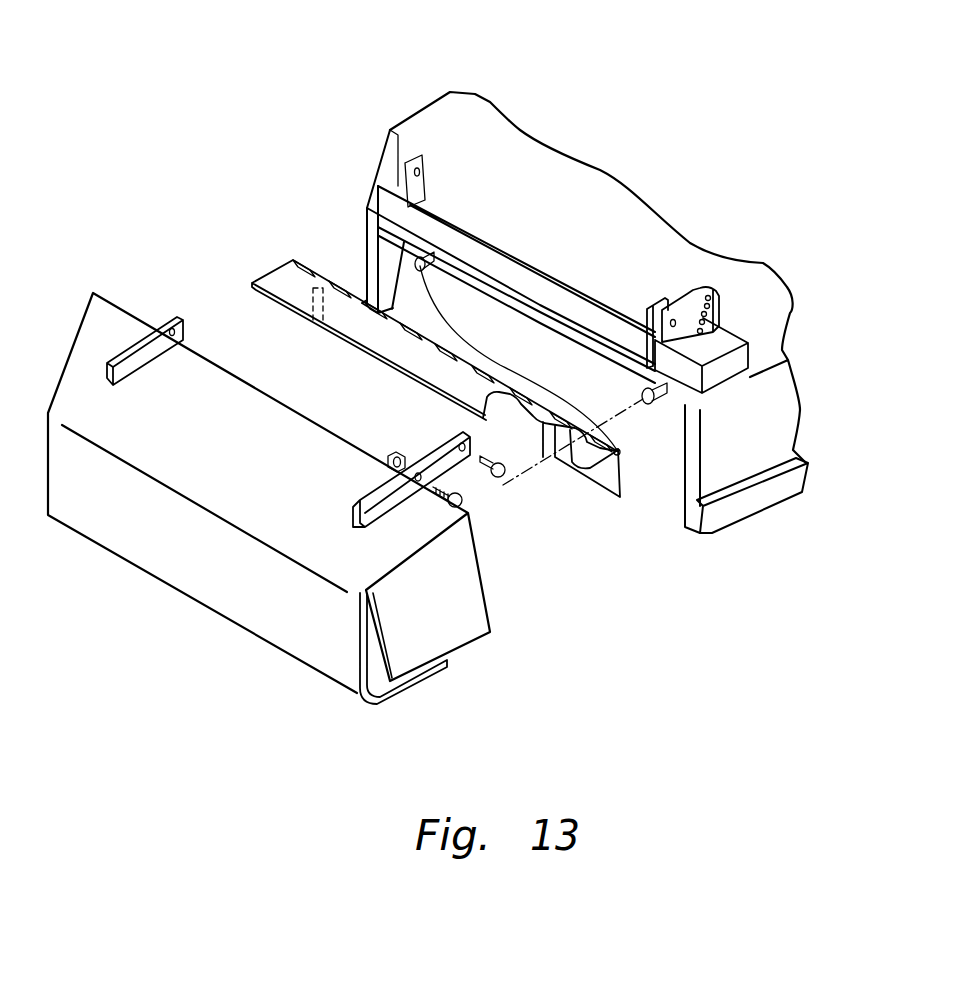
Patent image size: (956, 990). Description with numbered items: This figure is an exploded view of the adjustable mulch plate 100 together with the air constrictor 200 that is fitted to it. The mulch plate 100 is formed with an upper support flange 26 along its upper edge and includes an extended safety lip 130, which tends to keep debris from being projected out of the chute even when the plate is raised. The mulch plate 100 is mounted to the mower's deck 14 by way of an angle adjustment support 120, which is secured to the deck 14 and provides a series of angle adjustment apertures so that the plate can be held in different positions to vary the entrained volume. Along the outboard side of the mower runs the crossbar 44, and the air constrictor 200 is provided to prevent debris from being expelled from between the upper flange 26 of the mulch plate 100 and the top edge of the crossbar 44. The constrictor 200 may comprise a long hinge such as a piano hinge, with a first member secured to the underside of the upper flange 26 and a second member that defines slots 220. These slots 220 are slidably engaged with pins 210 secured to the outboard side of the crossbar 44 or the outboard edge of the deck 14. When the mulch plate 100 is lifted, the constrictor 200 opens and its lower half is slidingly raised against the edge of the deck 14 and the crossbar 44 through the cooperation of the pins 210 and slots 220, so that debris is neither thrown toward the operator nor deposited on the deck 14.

The deck 14 is at (572, 222).
The crossbar 44 is at (472, 250).
The angle adjustment support 120 is at (692, 308).
The air constrictor 200 is at (277, 277).
The slots 220 is at (483, 417).
The pins 210 is at (618, 455).
The adjustable mulch plate 100 is at (387, 500).
The upper support flange 26 is at (256, 472).
The extended lip 130 is at (420, 688).